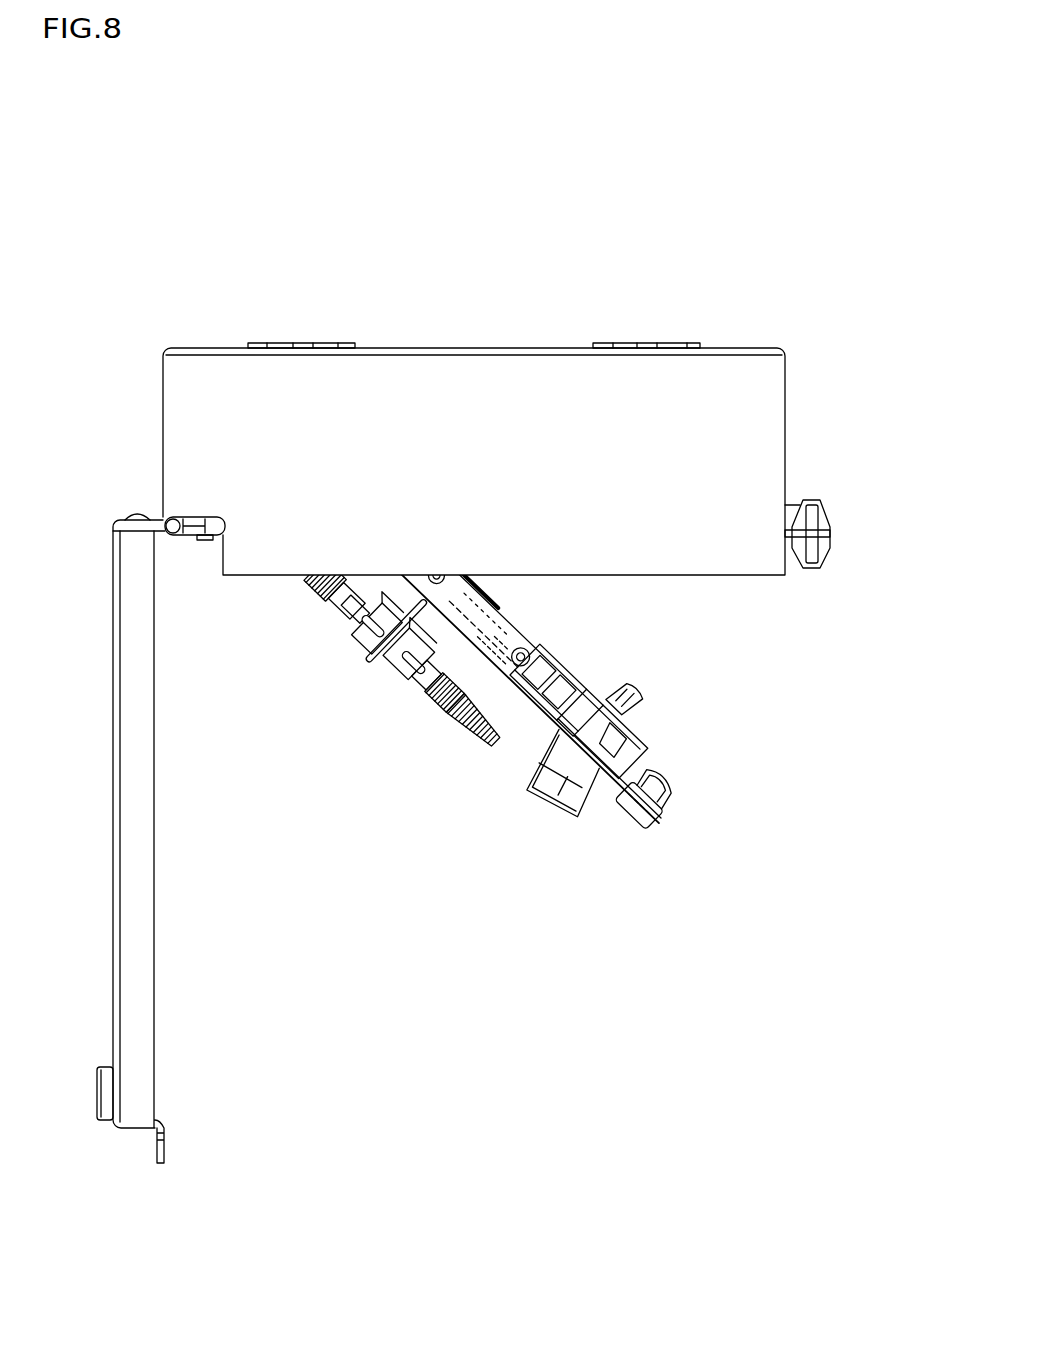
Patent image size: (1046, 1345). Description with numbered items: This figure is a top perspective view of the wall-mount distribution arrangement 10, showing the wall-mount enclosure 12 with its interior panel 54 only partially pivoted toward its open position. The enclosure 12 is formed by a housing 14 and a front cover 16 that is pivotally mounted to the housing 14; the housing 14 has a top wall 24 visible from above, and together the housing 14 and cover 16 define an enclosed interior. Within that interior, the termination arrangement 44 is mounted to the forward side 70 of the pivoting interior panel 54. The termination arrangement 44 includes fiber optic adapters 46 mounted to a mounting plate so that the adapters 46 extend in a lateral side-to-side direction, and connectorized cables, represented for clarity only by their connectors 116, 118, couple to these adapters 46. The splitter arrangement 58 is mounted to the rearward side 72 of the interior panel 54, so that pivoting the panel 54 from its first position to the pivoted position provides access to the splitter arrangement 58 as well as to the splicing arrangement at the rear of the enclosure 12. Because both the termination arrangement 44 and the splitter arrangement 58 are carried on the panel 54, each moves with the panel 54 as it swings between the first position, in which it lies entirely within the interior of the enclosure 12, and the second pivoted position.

The distribution arrangement 10 is at (837, 329).
The wall-mount enclosure 12 is at (106, 456).
The housing 14 is at (699, 366).
The front cover 16 is at (133, 875).
The top wall 24 is at (555, 450).
The termination arrangement 44 is at (332, 665).
The fiber optic adapters 46 is at (393, 650).
The interior panel 54 is at (620, 793).
The splitter arrangement 58 is at (570, 620).
The forward side 70 is at (532, 760).
The rearward side 72 is at (612, 768).
The connector 116 is at (427, 687).
The connector 118 is at (338, 604).